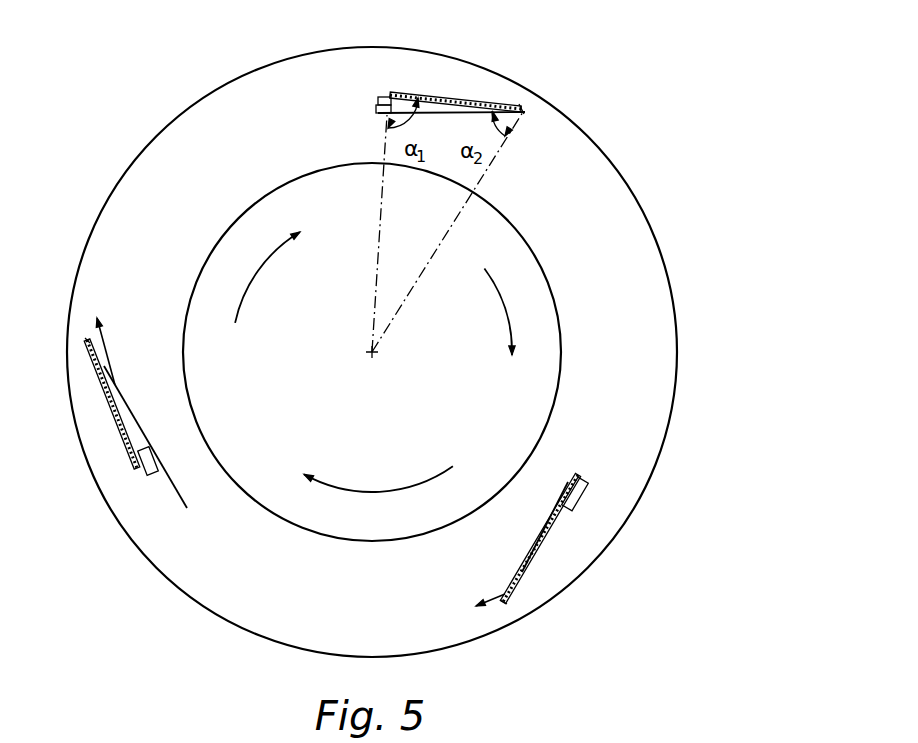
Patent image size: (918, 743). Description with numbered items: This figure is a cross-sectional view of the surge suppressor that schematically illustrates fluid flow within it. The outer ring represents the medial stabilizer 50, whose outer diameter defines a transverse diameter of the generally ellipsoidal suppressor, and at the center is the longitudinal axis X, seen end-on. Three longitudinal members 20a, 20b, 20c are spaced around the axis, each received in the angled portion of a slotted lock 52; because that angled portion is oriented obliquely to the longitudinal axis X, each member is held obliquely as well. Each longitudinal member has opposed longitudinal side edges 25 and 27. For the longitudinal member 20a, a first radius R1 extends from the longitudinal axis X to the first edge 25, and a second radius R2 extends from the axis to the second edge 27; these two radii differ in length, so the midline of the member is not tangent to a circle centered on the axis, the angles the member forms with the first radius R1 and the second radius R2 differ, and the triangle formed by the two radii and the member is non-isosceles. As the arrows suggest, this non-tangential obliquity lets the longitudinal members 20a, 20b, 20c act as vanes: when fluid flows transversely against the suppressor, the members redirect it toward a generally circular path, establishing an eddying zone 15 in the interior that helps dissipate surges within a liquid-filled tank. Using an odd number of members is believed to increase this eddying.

The medial stabilizer 50 is at (372, 352).
The eddying zone 15 is at (272, 452).
The longitudinal member 20a is at (458, 100).
The longitudinal member 20b is at (553, 545).
The longitudinal member 20c is at (112, 398).
The first longitudinal side edge 25 is at (390, 97).
The slotted lock 52 is at (442, 113).
The second longitudinal side edge 27 is at (530, 110).
The longitudinal axis X is at (372, 352).
The first radius R1 is at (375, 277).
The second radius R2 is at (407, 297).